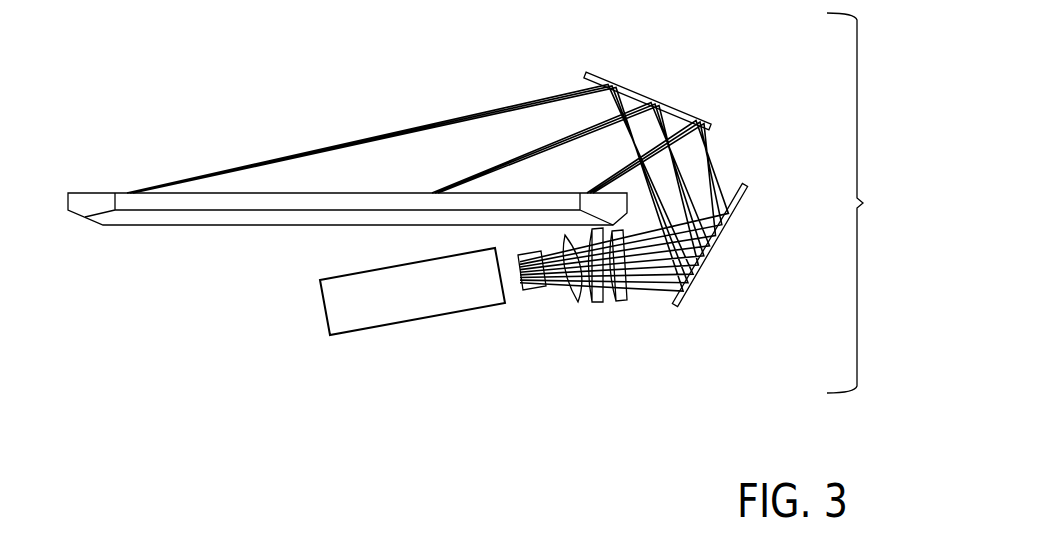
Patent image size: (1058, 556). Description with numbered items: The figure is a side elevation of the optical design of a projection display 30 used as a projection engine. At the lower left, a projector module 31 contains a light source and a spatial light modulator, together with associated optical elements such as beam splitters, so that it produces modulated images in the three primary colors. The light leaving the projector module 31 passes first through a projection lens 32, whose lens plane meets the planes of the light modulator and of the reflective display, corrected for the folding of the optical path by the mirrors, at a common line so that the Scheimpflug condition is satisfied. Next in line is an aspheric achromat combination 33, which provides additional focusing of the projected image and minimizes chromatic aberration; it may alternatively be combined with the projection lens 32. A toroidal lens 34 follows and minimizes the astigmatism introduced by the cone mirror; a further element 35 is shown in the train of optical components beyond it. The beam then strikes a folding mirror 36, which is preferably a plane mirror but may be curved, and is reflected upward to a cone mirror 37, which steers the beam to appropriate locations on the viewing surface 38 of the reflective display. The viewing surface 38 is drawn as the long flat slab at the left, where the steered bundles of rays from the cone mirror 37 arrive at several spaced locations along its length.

The projection display 30 is at (863, 203).
The projector module 31 is at (419, 322).
The projection lens 32 is at (542, 289).
The aspheric achromat combination 33 is at (577, 302).
The toroidal lens 34 is at (601, 305).
The lens 35 is at (624, 296).
The folding mirror 36 is at (698, 276).
The cone mirror 37 is at (633, 88).
The viewing surface 38 is at (128, 186).